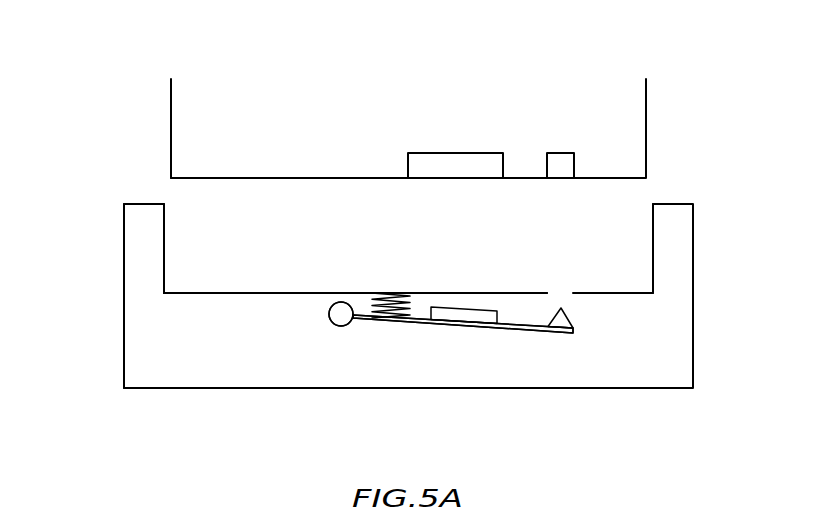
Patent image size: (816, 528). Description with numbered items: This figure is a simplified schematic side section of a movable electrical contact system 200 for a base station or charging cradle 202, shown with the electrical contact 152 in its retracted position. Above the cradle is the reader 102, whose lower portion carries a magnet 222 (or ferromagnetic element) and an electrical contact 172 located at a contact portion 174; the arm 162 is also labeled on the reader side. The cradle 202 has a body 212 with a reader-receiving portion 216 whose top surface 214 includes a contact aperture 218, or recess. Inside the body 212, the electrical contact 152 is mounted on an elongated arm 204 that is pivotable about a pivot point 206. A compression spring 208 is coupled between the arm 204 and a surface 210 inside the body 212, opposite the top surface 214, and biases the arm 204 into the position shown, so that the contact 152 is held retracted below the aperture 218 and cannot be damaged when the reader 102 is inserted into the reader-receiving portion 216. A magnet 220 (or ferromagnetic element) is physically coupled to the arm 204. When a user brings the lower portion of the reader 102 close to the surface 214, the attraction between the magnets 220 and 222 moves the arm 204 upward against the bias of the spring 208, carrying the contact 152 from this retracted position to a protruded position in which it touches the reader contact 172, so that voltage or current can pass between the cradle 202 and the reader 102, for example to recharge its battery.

The reader 102 is at (110, 68).
The arm 162 is at (297, 178).
The magnet 222 is at (452, 153).
The contact portion 174 is at (561, 153).
The electrical contact 172 is at (562, 177).
The charging cradle 202 is at (707, 248).
The body 212 is at (122, 296).
The top surface 214 is at (218, 293).
The reader-receiving portion 216 is at (173, 205).
The contact aperture 218 is at (607, 232).
The surface 210 is at (193, 296).
The movable electrical contact system 200 is at (523, 357).
The elongated arm 204 is at (520, 326).
The pivot point 206 is at (335, 316).
The compression spring 208 is at (372, 293).
The magnet 220 is at (455, 315).
The electrical contact 152 is at (565, 317).